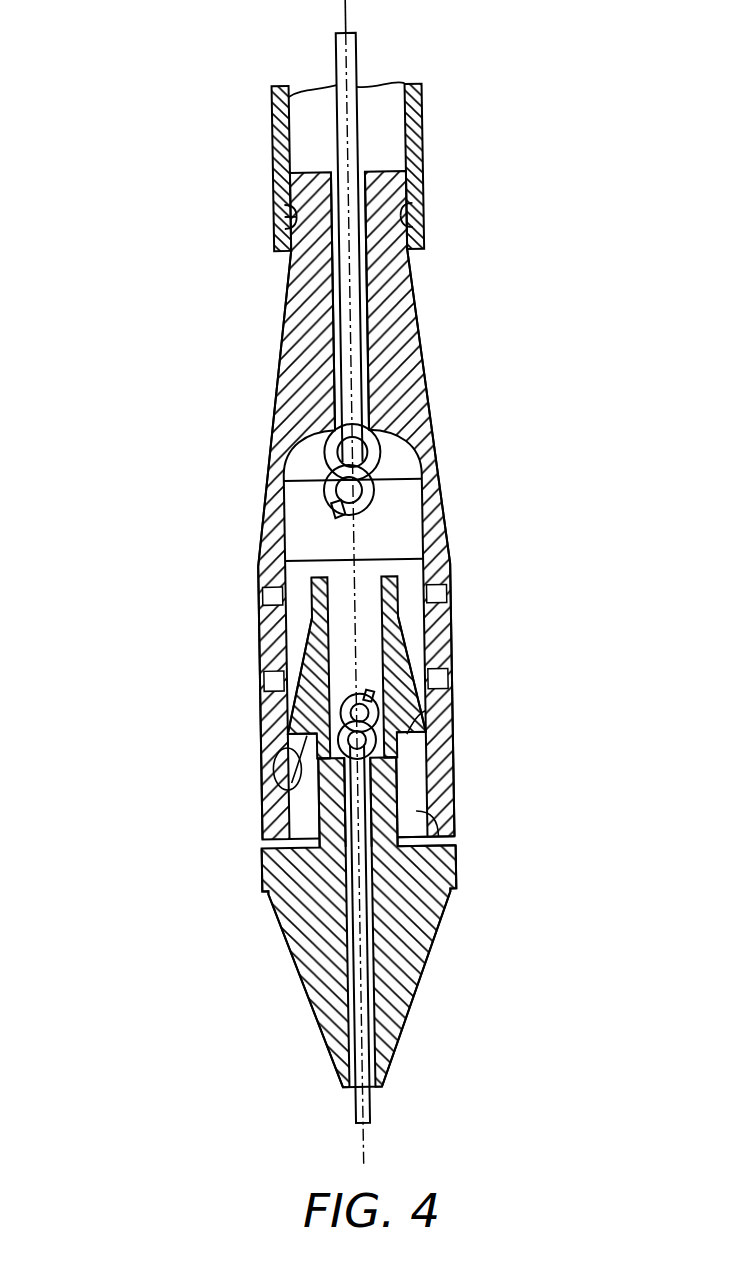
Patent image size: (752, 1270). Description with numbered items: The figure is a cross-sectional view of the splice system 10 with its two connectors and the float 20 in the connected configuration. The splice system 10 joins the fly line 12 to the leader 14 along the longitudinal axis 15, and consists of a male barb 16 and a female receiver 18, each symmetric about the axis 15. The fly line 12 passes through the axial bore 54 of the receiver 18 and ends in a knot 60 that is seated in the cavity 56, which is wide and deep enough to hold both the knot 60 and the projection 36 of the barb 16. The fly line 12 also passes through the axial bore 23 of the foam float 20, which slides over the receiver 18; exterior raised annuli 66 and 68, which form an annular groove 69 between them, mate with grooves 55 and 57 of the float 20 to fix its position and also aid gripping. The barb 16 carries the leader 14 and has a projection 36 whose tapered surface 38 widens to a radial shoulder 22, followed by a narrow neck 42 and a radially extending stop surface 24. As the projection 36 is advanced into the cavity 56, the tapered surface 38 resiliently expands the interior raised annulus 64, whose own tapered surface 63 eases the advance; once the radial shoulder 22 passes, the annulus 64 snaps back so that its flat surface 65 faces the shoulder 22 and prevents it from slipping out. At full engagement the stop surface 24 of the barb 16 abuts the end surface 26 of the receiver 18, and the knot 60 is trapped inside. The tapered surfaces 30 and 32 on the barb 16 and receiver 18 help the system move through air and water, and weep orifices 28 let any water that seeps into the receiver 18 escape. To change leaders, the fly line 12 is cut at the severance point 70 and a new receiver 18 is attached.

The splice system 10 is at (96, 442).
The fly line 12 is at (335, 53).
The leader 14 is at (367, 1106).
The longitudinal axis 15 is at (347, 22).
The barb 16 is at (499, 931).
The receiver 18 is at (500, 385).
The float 20 is at (274, 113).
The radial shoulder 22 is at (397, 760).
The axial bore 23 is at (305, 135).
The stop surface 24 is at (418, 832).
The end surface 26 is at (453, 851).
The weep orifices 28 is at (262, 597).
The tapered surface 30 is at (418, 992).
The tapered surface 32 is at (415, 328).
The projection 36 is at (395, 642).
The tapered surface 38 is at (310, 643).
The neck 42 is at (385, 790).
The axial bore 54 is at (335, 300).
The groove 55 is at (416, 200).
The cavity 56 is at (305, 525).
The groove 57 is at (416, 232).
The knot 60 is at (372, 452).
The tapered surface 63 is at (292, 786).
The raised annulus 64 is at (300, 746).
The flat surface 65 is at (427, 718).
The raised annulus 66 is at (285, 205).
The raised annulus 68 is at (286, 226).
The annular groove 69 is at (286, 216).
The severance point 70 is at (349, 167).